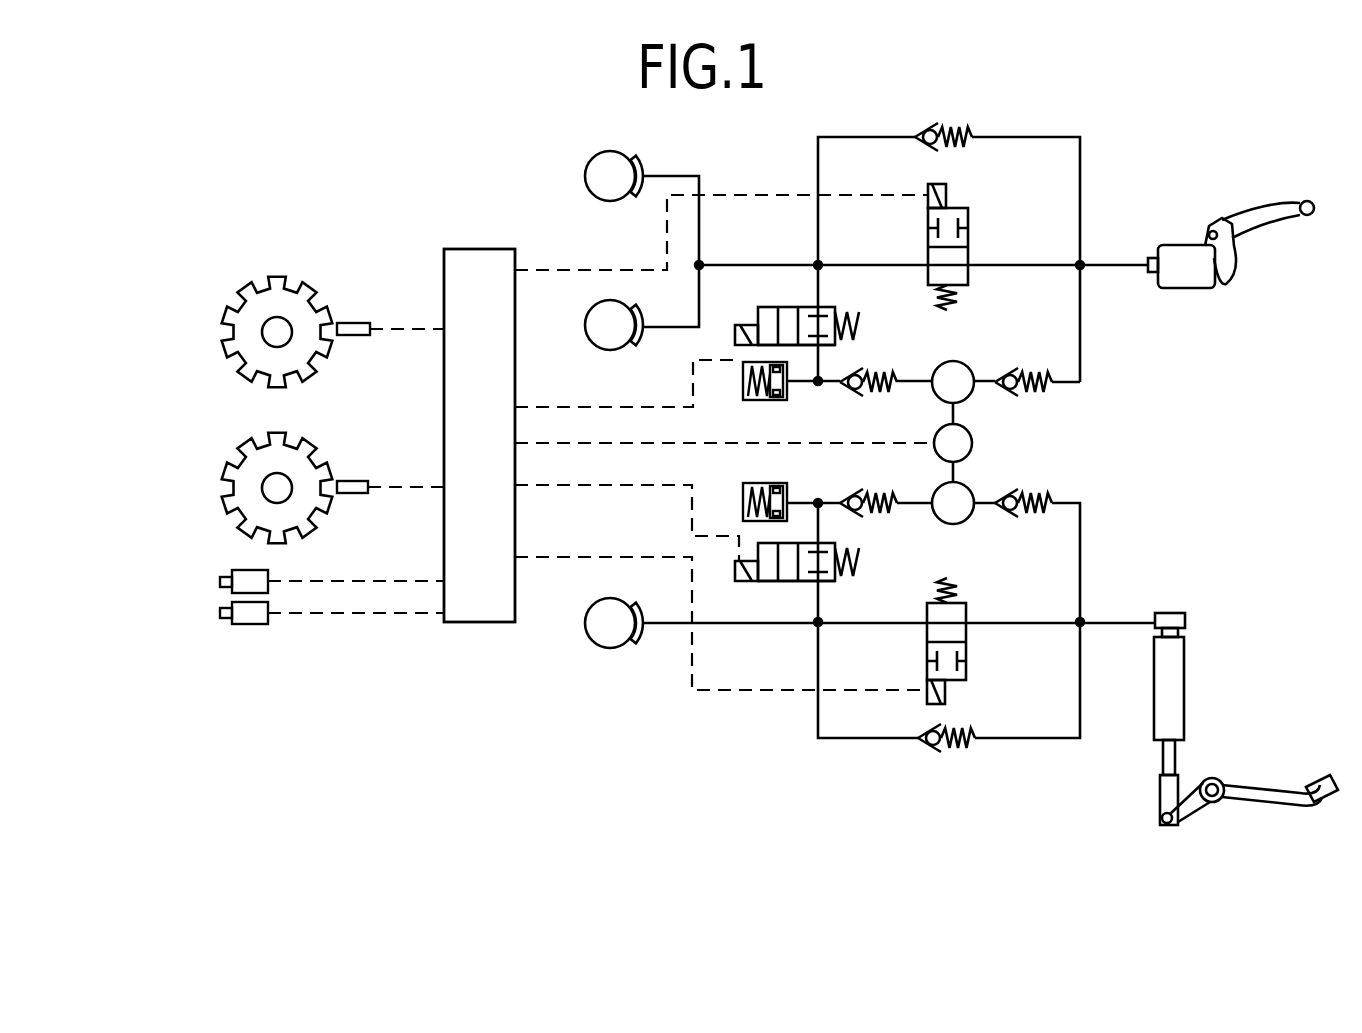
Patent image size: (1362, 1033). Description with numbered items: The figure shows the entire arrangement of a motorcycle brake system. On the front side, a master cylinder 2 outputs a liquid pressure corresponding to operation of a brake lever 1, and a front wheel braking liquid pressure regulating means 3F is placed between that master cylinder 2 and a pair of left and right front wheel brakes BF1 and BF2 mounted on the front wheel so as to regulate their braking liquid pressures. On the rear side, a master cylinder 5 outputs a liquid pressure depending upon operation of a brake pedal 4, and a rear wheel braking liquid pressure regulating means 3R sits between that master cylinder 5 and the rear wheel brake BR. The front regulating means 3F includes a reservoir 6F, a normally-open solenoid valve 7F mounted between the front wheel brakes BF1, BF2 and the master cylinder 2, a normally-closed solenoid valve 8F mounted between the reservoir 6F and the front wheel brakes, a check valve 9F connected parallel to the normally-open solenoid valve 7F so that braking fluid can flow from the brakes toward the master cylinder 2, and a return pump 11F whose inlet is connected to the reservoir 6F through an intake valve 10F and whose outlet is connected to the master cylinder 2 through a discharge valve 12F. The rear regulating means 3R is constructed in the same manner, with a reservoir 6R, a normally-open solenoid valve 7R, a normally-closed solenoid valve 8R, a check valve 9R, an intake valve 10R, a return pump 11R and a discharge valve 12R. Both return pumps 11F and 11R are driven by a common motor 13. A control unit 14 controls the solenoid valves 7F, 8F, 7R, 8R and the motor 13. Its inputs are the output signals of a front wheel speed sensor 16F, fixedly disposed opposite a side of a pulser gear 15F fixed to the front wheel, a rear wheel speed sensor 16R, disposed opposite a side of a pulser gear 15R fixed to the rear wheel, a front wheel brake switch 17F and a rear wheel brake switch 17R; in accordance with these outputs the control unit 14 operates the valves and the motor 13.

The brake lever 1 is at (1268, 222).
The master cylinder 2 is at (1185, 273).
The front wheel braking liquid pressure regulating means 3F is at (1096, 168).
The rear wheel braking liquid pressure regulating means 3R is at (1094, 552).
The brake pedal 4 is at (1320, 782).
The master cylinder 5 is at (1175, 686).
The reservoir 6F is at (765, 400).
The reservoir 6R is at (753, 483).
The normally-open solenoid valve 7F is at (968, 236).
The normally-open solenoid valve 7R is at (966, 650).
The normally-closed solenoid valve 8F is at (773, 307).
The normally-closed solenoid valve 8R is at (775, 582).
The check valve 9F is at (918, 128).
The check valve 9R is at (920, 746).
The intake valve 10F is at (872, 372).
The intake valve 10R is at (872, 516).
The return pump 11F is at (953, 361).
The return pump 11R is at (962, 524).
The discharge valve 12F is at (1008, 370).
The discharge valve 12R is at (1035, 528).
The motor 13 is at (974, 443).
The control unit 14 is at (497, 458).
The pulser gear 15F is at (270, 300).
The pulser gear 15R is at (260, 470).
The front wheel speed sensor 16F is at (351, 324).
The rear wheel speed sensor 16R is at (352, 482).
The front wheel brake switch 17F is at (252, 578).
The rear wheel brake switch 17R is at (253, 618).
The front wheel brake BF1 is at (583, 172).
The front wheel brake BF2 is at (580, 345).
The rear wheel brake BR is at (585, 645).